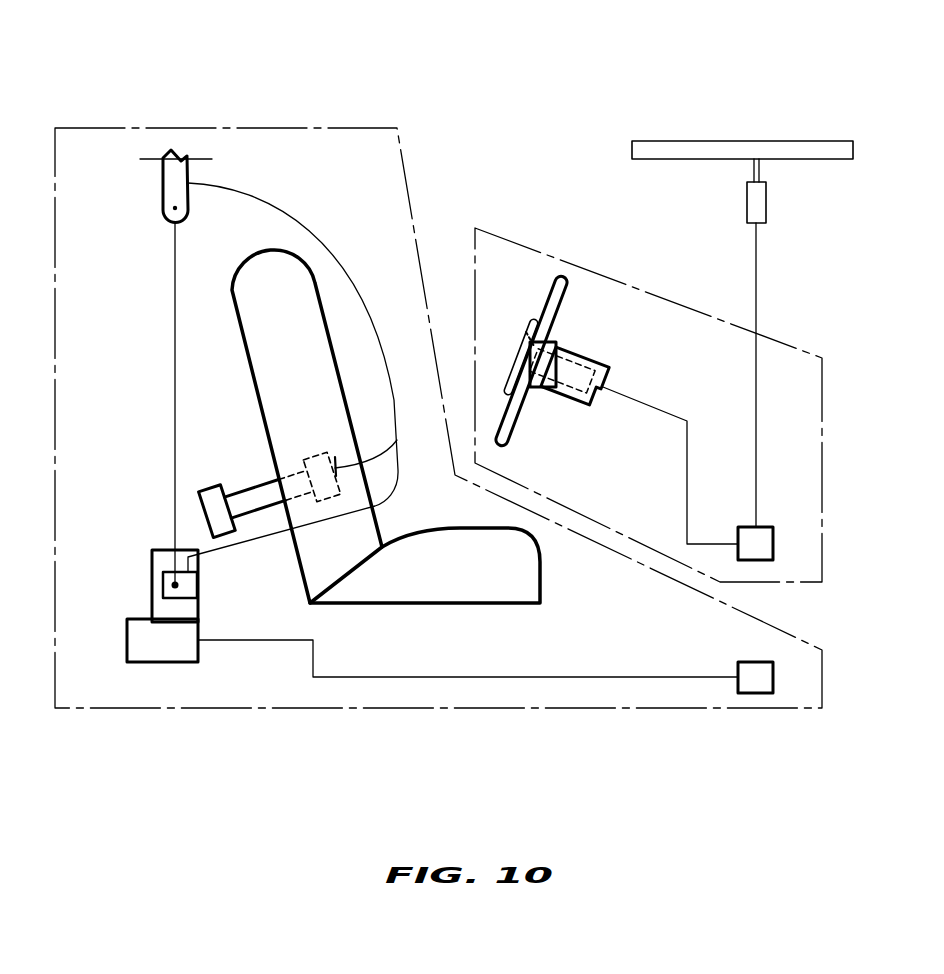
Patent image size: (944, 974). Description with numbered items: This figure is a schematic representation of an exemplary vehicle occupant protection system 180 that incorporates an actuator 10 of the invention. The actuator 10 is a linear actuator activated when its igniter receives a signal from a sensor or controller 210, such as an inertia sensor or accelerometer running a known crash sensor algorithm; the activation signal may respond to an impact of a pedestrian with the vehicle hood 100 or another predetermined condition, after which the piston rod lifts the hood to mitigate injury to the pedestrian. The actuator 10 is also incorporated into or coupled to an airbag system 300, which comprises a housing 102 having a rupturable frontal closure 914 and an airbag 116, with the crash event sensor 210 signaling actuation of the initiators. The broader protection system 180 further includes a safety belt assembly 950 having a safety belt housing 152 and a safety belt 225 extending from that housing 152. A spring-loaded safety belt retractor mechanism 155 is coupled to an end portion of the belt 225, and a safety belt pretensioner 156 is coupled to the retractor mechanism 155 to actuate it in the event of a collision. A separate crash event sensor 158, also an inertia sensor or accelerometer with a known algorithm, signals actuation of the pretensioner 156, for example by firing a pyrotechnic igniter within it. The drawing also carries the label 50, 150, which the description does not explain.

The vehicle occupant protection system 180 is at (463, 28).
The safety belt assembly 950 is at (170, 127).
The airbag system 300 is at (775, 340).
The safety belt 225 is at (307, 227).
The safety belt retractor mechanism 155 is at (162, 550).
The safety belt housing 152 is at (163, 588).
The safety belt pretensioner 156 is at (163, 662).
The crash event sensor 158 is at (740, 663).
The crash event sensor 210 is at (757, 542).
The vehicle hood 100 is at (727, 141).
The actuator 10 is at (747, 207).
The rupturable frontal closure 914 is at (516, 356).
The housing 102 is at (521, 350).
The airbag 116 is at (530, 357).
The steering column 50 is at (637, 331).
The steering actuator 150 is at (578, 378).